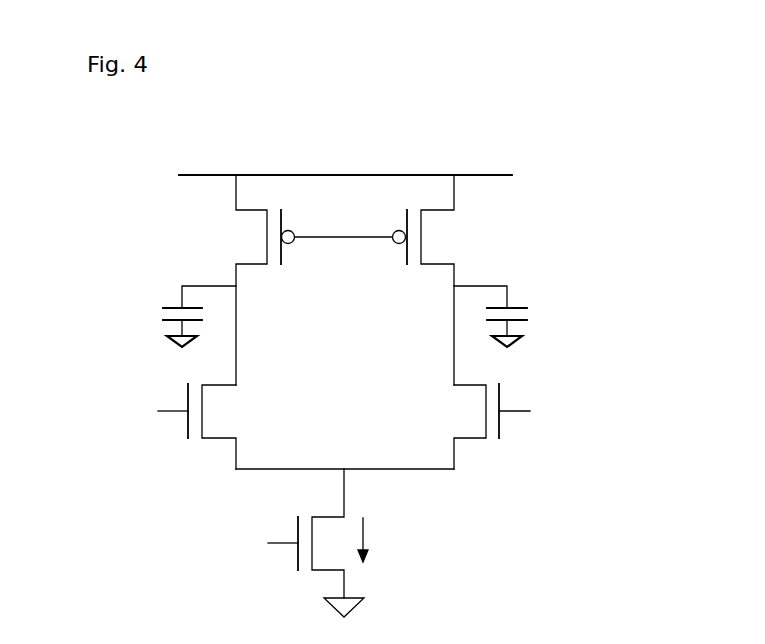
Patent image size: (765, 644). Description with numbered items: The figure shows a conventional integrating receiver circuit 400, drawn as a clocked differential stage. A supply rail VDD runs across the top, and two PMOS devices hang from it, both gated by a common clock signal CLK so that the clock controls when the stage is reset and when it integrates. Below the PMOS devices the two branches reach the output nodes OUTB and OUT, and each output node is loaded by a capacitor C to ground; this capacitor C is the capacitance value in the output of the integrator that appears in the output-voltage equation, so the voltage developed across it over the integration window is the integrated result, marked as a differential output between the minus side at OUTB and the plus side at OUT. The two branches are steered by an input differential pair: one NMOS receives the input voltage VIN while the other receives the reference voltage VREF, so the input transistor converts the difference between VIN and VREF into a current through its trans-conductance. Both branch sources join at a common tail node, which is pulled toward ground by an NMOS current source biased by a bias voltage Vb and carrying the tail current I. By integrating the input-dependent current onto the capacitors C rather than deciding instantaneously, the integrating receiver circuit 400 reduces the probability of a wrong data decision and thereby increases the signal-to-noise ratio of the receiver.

The integrating receiver circuit 400 is at (381, 364).
The capacitance C is at (344, 324).
The supply voltage rail VDD is at (345, 159).
The clock signal CLK is at (343, 253).
The inverted output node OUTB is at (196, 281).
The output node OUT is at (481, 281).
The input voltage VIN is at (155, 411).
The reference voltage VREF is at (538, 411).
The bias voltage Vb is at (268, 543).
The tail current I is at (367, 540).